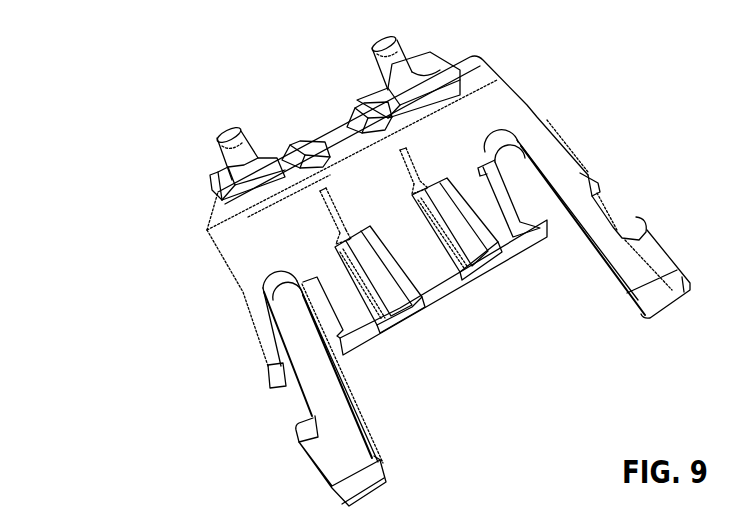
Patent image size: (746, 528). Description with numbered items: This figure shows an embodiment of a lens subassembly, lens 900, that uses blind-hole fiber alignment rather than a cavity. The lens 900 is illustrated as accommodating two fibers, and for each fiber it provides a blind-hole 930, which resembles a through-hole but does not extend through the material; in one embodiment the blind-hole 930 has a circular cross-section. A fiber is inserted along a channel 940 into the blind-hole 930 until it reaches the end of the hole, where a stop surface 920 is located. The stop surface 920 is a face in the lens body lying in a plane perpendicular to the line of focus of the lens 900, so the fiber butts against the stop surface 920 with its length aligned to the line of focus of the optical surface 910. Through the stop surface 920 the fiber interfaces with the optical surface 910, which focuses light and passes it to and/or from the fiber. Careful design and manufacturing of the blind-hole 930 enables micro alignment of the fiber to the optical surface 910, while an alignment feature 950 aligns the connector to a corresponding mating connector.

The lens 900 is at (103, 35).
The optical surface 910 is at (294, 153).
The stop surface 920 is at (316, 194).
The blind-hole 930 is at (324, 207).
The channel 940 is at (386, 291).
The alignment feature 950 is at (394, 58).